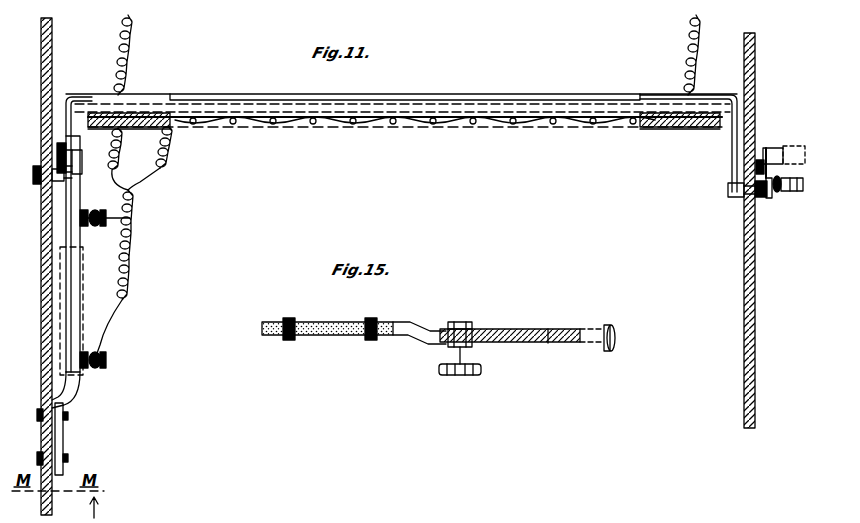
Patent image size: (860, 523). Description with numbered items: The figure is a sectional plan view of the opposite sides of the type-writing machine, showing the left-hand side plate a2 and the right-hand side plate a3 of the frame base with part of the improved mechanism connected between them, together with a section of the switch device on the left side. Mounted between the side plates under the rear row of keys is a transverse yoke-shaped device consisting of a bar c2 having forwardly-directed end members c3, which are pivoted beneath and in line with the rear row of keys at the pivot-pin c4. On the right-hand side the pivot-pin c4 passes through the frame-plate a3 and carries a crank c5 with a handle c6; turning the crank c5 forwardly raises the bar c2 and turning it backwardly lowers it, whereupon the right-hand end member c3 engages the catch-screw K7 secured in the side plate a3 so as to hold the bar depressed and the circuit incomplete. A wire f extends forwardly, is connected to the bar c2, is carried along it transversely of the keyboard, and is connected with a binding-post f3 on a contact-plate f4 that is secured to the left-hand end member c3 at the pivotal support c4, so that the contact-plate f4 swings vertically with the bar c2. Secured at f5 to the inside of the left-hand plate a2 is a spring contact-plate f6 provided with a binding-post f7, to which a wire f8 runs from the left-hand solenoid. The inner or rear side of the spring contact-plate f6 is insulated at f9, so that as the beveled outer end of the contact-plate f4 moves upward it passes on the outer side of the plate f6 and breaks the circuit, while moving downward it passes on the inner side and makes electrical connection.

In FIG. 11, the left-hand side plate a2 is at (44, 334).
In FIG. 11, the right-hand side plate a3 is at (745, 262).
In FIG. 11, the bar c2 is at (532, 100).
In FIG. 11, the forwardly-directed end members c3 is at (66, 100).
In FIG. 11, the pivot-pin c4 is at (84, 154).
In FIG. 11, the crank c5 is at (768, 200).
In FIG. 11, the handle c6 is at (796, 191).
In FIG. 11, the catch-screw K7 is at (758, 160).
In FIG. 11, the wire f is at (162, 168).
In FIG. 11, the binding-post f3 is at (130, 220).
In FIG. 11, the contact-plate f4 is at (44, 184).
In FIG. 11, the securing point of spring contact-plate f5 is at (64, 436).
In FIG. 15, the securing point of spring contact-plate f5 is at (332, 336).
In FIG. 11, the spring contact-plate f6 is at (62, 388).
In FIG. 15, the spring contact-plate f6 is at (320, 322).
In FIG. 11, the binding-post f7 is at (106, 360).
In FIG. 15, the binding-post f7 is at (462, 376).
In FIG. 11, the wire f8 is at (133, 34).
In FIG. 15, the insulation f9 is at (606, 325).